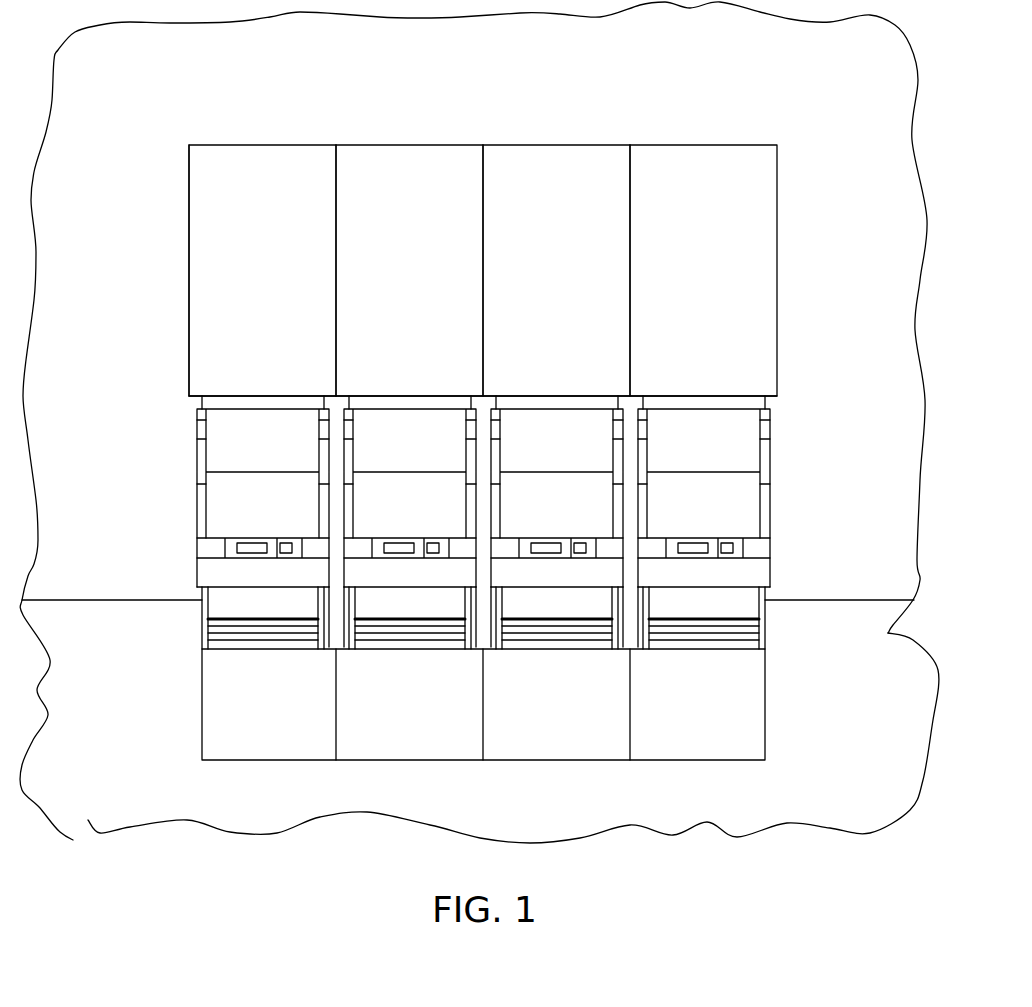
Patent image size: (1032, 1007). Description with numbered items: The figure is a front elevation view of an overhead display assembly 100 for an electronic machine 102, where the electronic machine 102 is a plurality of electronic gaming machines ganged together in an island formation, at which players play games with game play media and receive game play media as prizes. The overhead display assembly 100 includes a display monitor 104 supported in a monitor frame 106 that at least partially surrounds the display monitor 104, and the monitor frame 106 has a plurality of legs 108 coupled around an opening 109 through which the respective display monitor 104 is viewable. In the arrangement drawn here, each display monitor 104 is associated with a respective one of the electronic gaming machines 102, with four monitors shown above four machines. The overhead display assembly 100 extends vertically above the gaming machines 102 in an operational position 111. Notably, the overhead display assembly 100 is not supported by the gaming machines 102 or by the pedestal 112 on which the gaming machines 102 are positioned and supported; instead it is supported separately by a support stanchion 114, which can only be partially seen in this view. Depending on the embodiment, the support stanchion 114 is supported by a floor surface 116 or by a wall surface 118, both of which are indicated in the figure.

The overhead display assembly 100 is at (815, 185).
The electronic machine 102 is at (197, 430).
The display monitor 104 is at (281, 283).
The monitor frame 106 is at (262, 145).
The legs 108 is at (557, 145).
The opening 109 is at (286, 164).
The operational position 111 is at (815, 253).
The pedestal 112 is at (287, 718).
The support stanchion 114 is at (762, 408).
The floor surface 116 is at (133, 721).
The wall surface 118 is at (133, 558).